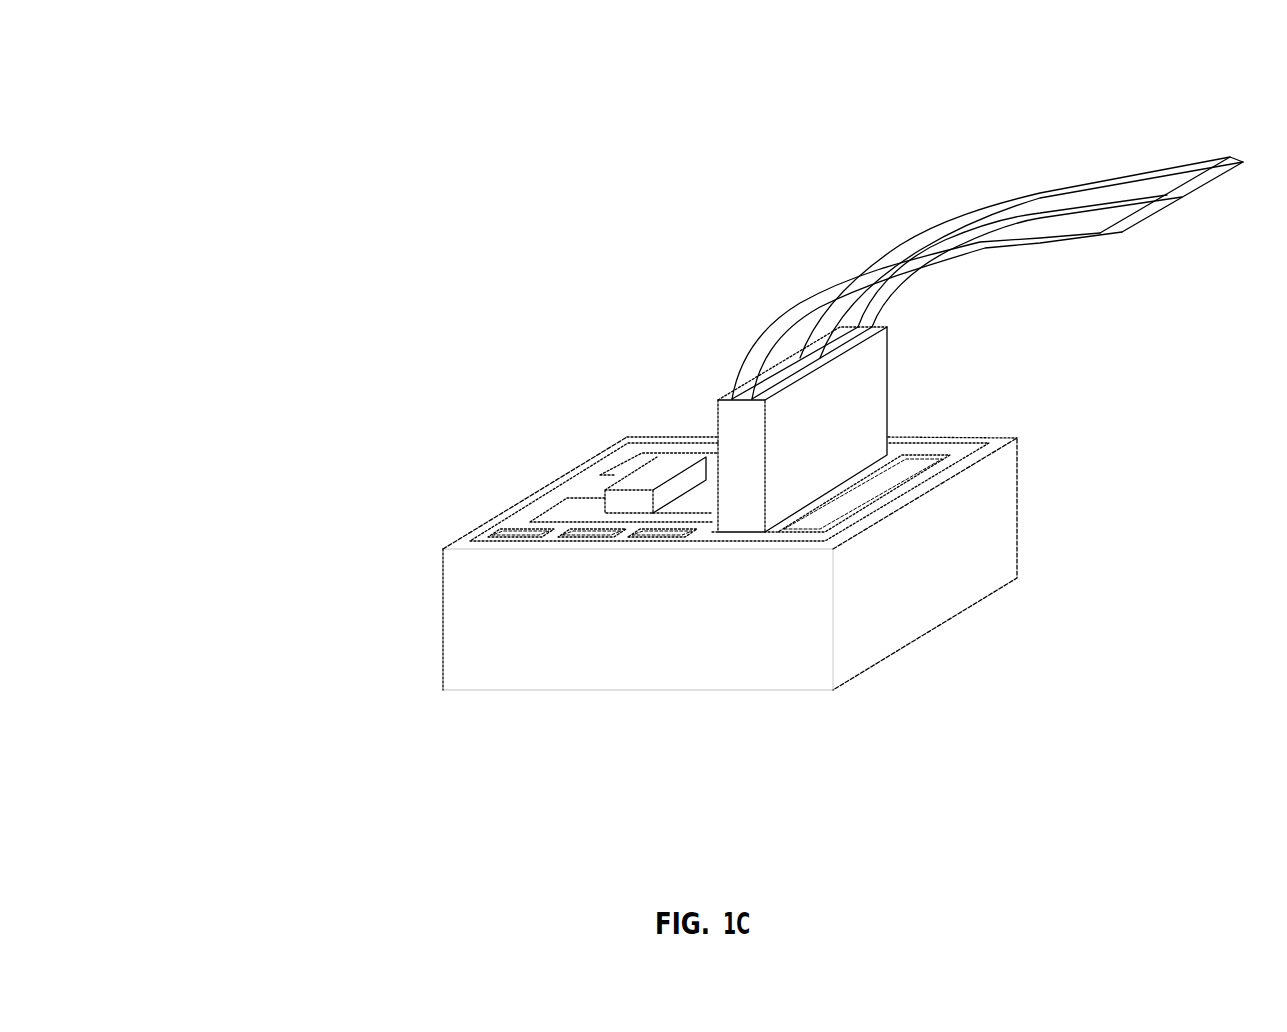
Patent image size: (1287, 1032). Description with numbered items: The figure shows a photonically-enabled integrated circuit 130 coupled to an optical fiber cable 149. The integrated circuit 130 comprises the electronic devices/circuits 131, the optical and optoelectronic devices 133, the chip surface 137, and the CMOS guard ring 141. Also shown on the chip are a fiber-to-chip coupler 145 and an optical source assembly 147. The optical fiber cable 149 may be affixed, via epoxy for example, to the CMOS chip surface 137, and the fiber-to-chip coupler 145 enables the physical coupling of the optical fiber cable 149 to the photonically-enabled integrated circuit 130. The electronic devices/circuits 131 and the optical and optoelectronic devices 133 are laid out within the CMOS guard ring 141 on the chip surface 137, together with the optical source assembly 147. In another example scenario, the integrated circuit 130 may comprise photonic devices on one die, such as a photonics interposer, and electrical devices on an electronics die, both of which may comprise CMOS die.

The photonically-enabled integrated circuit 130 is at (283, 97).
The electronic devices/circuits 131 is at (647, 540).
The optical and optoelectronic devices 133 is at (598, 519).
The chip surface 137 is at (582, 488).
The CMOS guard ring 141 is at (1002, 440).
The fiber-to-chip coupler 145 is at (847, 440).
The optical source assembly 147 is at (665, 468).
The optical fiber cable 149 is at (1048, 187).